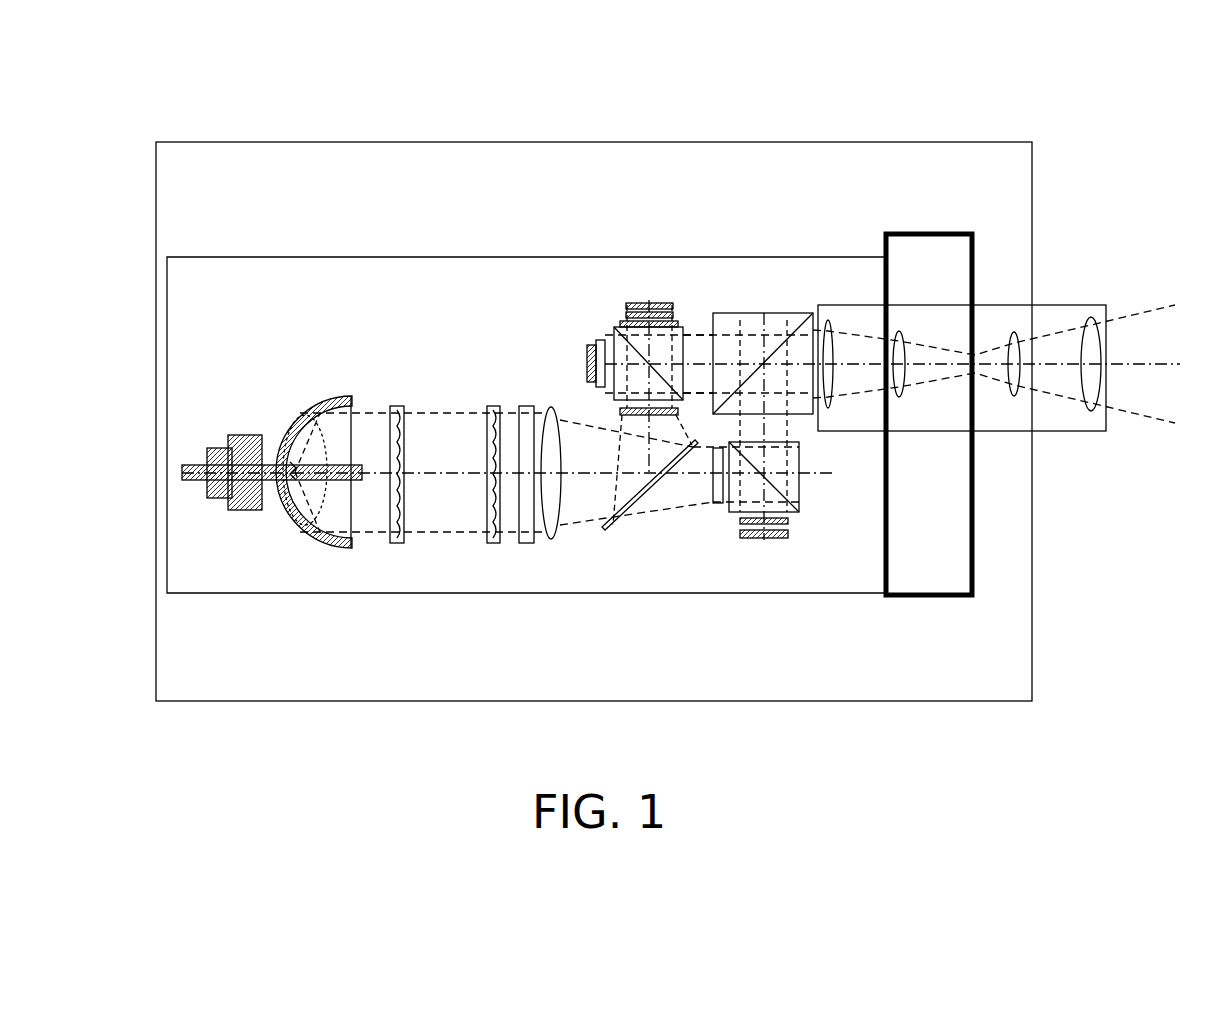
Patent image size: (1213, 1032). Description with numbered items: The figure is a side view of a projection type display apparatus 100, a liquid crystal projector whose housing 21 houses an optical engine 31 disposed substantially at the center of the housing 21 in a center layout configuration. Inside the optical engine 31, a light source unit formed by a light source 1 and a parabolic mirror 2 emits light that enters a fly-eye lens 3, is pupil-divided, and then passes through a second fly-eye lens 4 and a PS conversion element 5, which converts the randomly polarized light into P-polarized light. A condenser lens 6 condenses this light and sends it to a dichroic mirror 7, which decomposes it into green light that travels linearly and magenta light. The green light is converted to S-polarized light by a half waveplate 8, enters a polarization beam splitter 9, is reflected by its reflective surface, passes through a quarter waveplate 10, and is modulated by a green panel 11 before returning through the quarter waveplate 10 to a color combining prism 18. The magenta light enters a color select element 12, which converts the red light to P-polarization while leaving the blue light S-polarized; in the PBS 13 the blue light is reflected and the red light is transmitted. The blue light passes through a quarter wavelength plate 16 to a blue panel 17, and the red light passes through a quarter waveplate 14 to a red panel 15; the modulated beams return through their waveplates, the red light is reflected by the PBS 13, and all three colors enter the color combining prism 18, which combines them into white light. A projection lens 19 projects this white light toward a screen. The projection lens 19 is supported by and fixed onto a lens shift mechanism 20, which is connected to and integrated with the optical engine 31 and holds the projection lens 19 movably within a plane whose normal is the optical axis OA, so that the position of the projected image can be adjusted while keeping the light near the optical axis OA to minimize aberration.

The light source 1 is at (287, 480).
The mirror 2 is at (313, 527).
The fly-eye lens 3 is at (390, 533).
The fly-eye lens 4 is at (493, 543).
The PS conversion element 5 is at (527, 553).
The condenser lens 6 is at (552, 547).
The dichroic mirror 7 is at (605, 527).
The half waveplate 8 is at (713, 503).
The polarization beam splitter 9 is at (797, 508).
The quarter waveplate 10 is at (787, 523).
The green panel 11 is at (772, 538).
The color select element 12 is at (622, 410).
The PBS 13 is at (683, 337).
The quarter waveplate 14 is at (632, 322).
The red panel 15 is at (665, 305).
The quarter wavelength plate 16 is at (602, 340).
The blue panel 17 is at (590, 340).
The color combining prism 18 is at (787, 325).
The projection lens 19 is at (910, 305).
The lens shift mechanism 20 is at (949, 285).
The housing 21 is at (1032, 632).
The optical engine 31 is at (237, 295).
The projection type display apparatus 100 is at (1118, 146).
The optical axis OA is at (1053, 365).